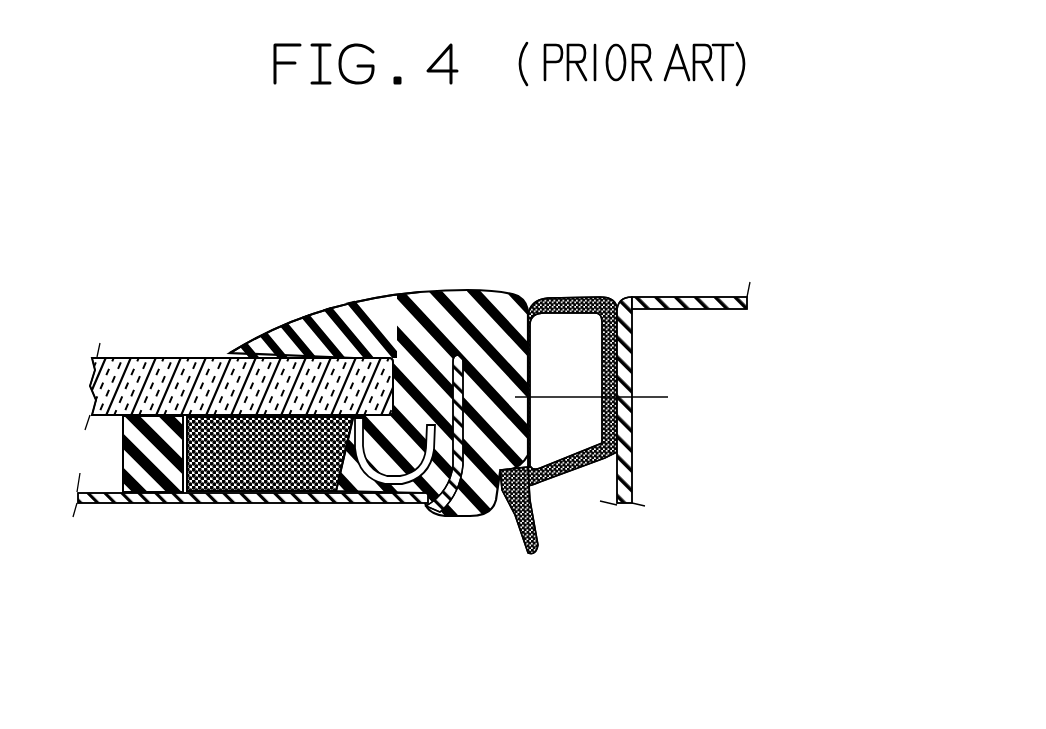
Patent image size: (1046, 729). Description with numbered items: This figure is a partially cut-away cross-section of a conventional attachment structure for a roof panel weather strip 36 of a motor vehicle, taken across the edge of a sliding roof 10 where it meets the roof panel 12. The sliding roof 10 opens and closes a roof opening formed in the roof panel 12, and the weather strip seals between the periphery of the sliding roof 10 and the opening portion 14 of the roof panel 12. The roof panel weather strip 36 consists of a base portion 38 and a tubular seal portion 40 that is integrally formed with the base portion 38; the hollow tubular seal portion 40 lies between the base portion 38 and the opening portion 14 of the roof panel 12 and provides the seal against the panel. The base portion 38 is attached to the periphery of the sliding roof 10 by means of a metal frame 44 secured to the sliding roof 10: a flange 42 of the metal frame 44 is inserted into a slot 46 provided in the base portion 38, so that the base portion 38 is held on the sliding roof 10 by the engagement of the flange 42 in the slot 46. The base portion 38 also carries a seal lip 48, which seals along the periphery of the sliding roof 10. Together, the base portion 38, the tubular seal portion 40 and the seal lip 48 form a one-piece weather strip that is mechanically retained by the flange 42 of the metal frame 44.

The sliding roof 10 is at (158, 357).
The roof panel 12 is at (690, 297).
The opening portion 14 is at (623, 300).
The roof panel weather strip 36 is at (337, 305).
The base portion 38 is at (480, 293).
The tubular seal portion 40 is at (575, 296).
The flange 42 is at (427, 507).
The metal frame 44 is at (390, 503).
The slot 46 is at (668, 397).
The seal lip 48 is at (350, 503).